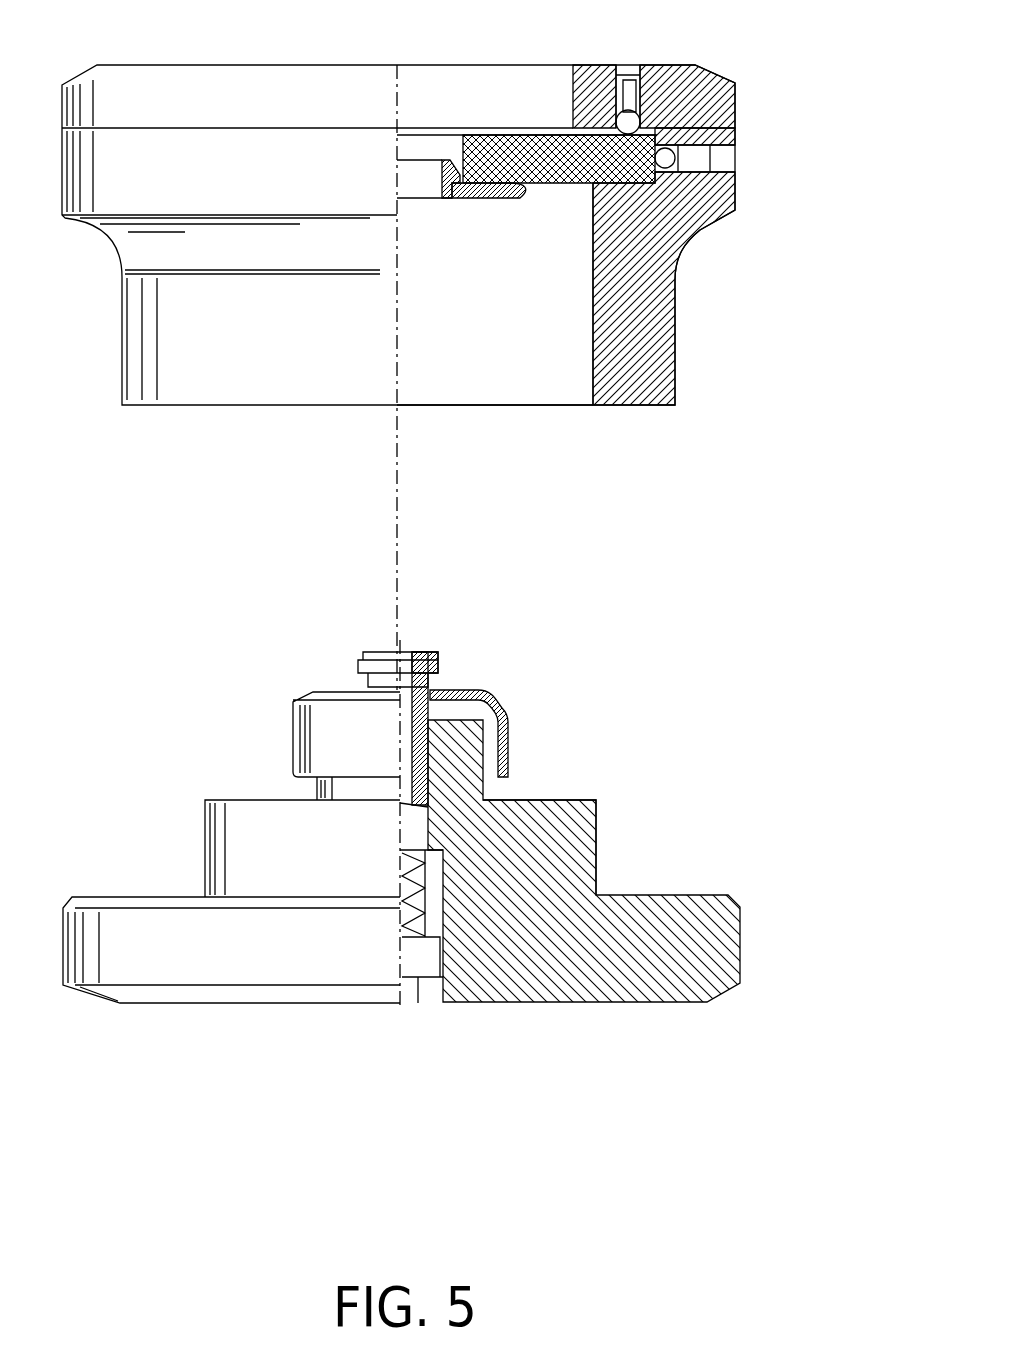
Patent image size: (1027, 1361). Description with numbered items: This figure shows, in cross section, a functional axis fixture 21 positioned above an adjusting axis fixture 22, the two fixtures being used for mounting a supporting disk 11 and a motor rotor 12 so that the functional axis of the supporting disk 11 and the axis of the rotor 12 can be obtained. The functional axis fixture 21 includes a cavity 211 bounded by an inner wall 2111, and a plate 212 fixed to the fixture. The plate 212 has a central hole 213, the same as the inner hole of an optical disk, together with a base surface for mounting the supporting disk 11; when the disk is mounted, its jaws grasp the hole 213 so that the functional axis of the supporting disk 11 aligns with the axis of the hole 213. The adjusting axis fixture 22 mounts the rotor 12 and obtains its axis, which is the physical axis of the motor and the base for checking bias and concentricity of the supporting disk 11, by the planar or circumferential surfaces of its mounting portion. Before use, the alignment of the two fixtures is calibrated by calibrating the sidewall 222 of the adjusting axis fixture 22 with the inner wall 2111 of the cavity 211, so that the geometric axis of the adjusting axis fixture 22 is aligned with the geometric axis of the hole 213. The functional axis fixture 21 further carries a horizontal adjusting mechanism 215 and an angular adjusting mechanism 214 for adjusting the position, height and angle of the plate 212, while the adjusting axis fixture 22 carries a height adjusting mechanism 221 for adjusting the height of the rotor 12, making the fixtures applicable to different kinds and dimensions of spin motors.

The supporting disk 11 is at (424, 203).
The motor rotor 12 is at (485, 692).
The functional axis fixture 21 is at (408, 276).
The cavity 211 is at (549, 395).
The inner wall 2111 is at (593, 352).
The plate 212 is at (535, 140).
The central hole 213 is at (438, 138).
The angular adjusting mechanism 214 is at (628, 90).
The horizontal adjusting mechanism 215 is at (695, 157).
The adjusting axis fixture 22 is at (440, 904).
The height adjusting mechanism 221 is at (418, 1005).
The sidewall 222 is at (597, 832).